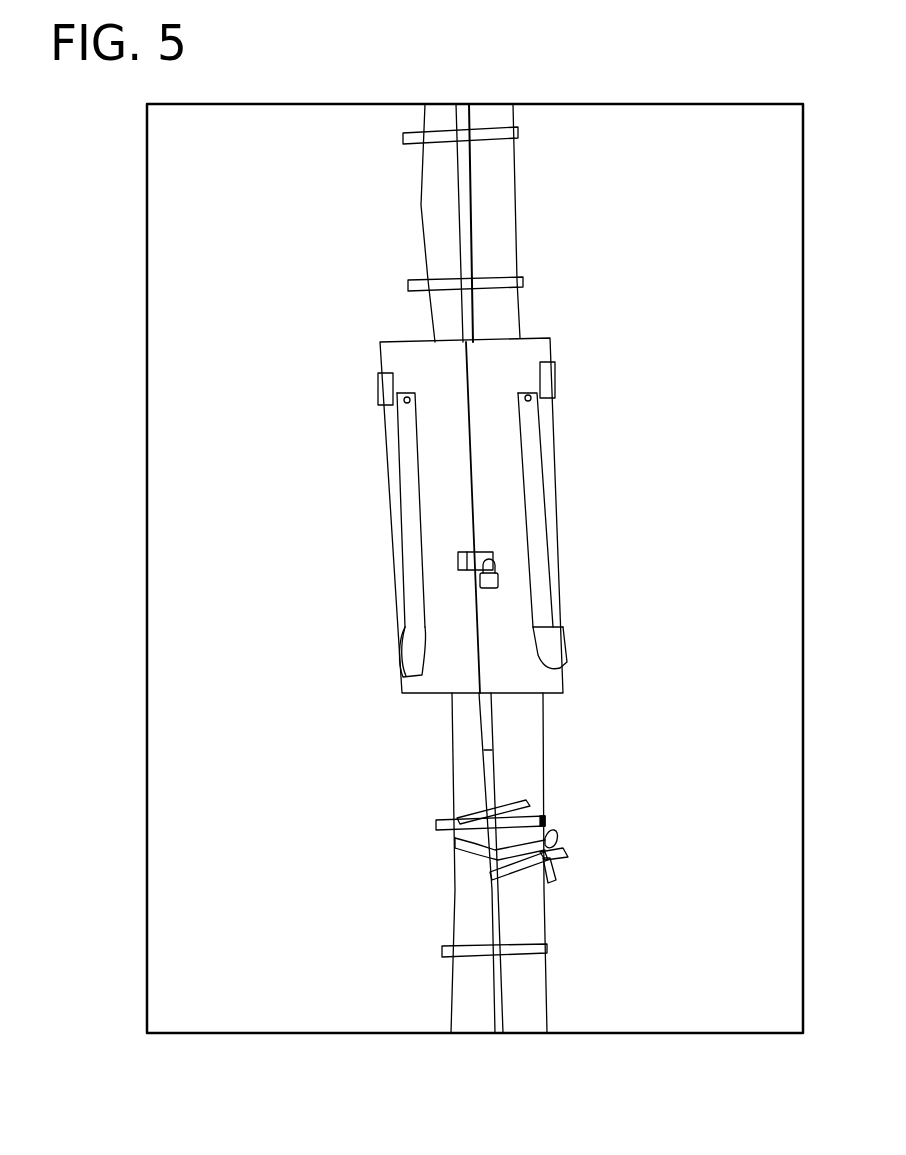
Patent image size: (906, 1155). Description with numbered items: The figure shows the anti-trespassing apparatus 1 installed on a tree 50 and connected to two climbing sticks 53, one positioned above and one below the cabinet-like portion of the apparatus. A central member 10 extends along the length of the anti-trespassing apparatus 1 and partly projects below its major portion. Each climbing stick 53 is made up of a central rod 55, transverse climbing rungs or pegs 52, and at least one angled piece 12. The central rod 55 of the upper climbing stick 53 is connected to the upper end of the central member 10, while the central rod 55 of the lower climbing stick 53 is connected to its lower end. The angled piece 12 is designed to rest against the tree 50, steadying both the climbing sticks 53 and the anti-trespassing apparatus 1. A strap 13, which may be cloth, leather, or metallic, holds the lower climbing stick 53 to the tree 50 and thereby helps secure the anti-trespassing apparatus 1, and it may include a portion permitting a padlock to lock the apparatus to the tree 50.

The anti-trespassing apparatus 1 is at (420, 458).
The central member 10 is at (464, 727).
The angled piece 12 is at (455, 802).
The strap 13 is at (444, 834).
The tree 50 is at (422, 240).
The transverse climbing rungs or pegs 52 is at (495, 264).
The climbing stick 53 is at (433, 189).
The central rod 55 is at (470, 900).